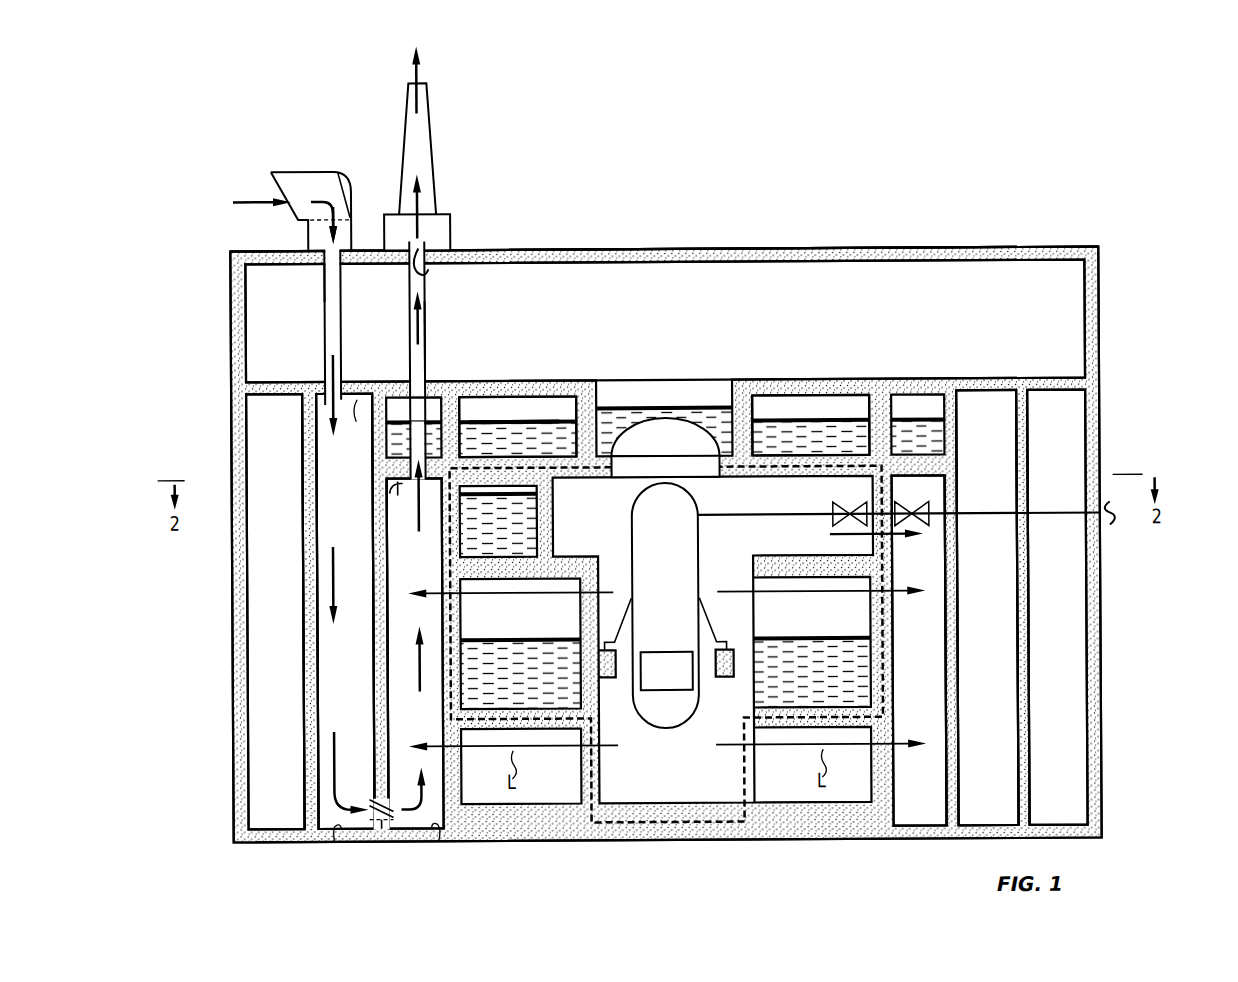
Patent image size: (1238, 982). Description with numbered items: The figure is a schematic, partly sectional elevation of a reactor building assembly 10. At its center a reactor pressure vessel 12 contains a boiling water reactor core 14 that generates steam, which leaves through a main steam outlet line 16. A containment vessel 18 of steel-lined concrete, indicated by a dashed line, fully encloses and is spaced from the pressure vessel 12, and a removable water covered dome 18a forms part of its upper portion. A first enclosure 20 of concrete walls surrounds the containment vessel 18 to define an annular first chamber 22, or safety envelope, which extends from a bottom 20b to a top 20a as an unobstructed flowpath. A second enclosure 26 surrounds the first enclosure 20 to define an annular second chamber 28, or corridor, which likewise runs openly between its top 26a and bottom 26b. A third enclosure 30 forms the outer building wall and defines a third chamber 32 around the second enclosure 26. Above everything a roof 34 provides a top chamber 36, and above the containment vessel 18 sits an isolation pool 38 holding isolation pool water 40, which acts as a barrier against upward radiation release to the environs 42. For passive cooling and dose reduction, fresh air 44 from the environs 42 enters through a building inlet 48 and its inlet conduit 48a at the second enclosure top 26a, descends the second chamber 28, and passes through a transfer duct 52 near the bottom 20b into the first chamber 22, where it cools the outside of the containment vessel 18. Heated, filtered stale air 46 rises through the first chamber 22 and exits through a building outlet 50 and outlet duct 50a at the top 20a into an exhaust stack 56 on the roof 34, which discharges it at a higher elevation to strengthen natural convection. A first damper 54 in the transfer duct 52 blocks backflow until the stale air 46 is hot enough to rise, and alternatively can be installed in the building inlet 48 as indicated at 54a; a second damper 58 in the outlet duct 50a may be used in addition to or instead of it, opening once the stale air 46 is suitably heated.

The reactor building assembly 10 is at (1104, 383).
The reactor pressure vessel 12 is at (632, 513).
The boiling water reactor core 14 is at (657, 680).
The main steam outlet line 16 is at (779, 515).
The containment vessel 18 is at (686, 822).
The water covered dome 18a is at (666, 412).
The first enclosure 20 is at (373, 549).
The first enclosure top 20a is at (390, 488).
The first enclosure bottom 20b is at (437, 840).
The first chamber 22 is at (405, 570).
The second enclosure 26 is at (303, 590).
The second enclosure top 26a is at (354, 426).
The second enclosure bottom 26b is at (333, 840).
The second chamber 28 is at (335, 650).
The third enclosure 30 is at (232, 597).
The third chamber 32 is at (265, 650).
The roof 34 is at (1026, 249).
The top chamber 36 is at (965, 328).
The isolation pool 38 is at (567, 396).
The isolation pool water 40 is at (545, 420).
The environs 42 is at (703, 222).
The fresh air 44 is at (250, 200).
The stale air 46 is at (420, 62).
The building inlet 48 is at (326, 377).
The inlet conduit 48a is at (343, 299).
The building outlet 50 is at (407, 352).
The outlet duct 50a is at (428, 366).
The transfer duct 52 is at (367, 790).
The first damper 54 is at (396, 800).
The first damper alternate location 54a is at (355, 193).
The exhaust stack 56 is at (432, 128).
The second damper 58 is at (430, 277).